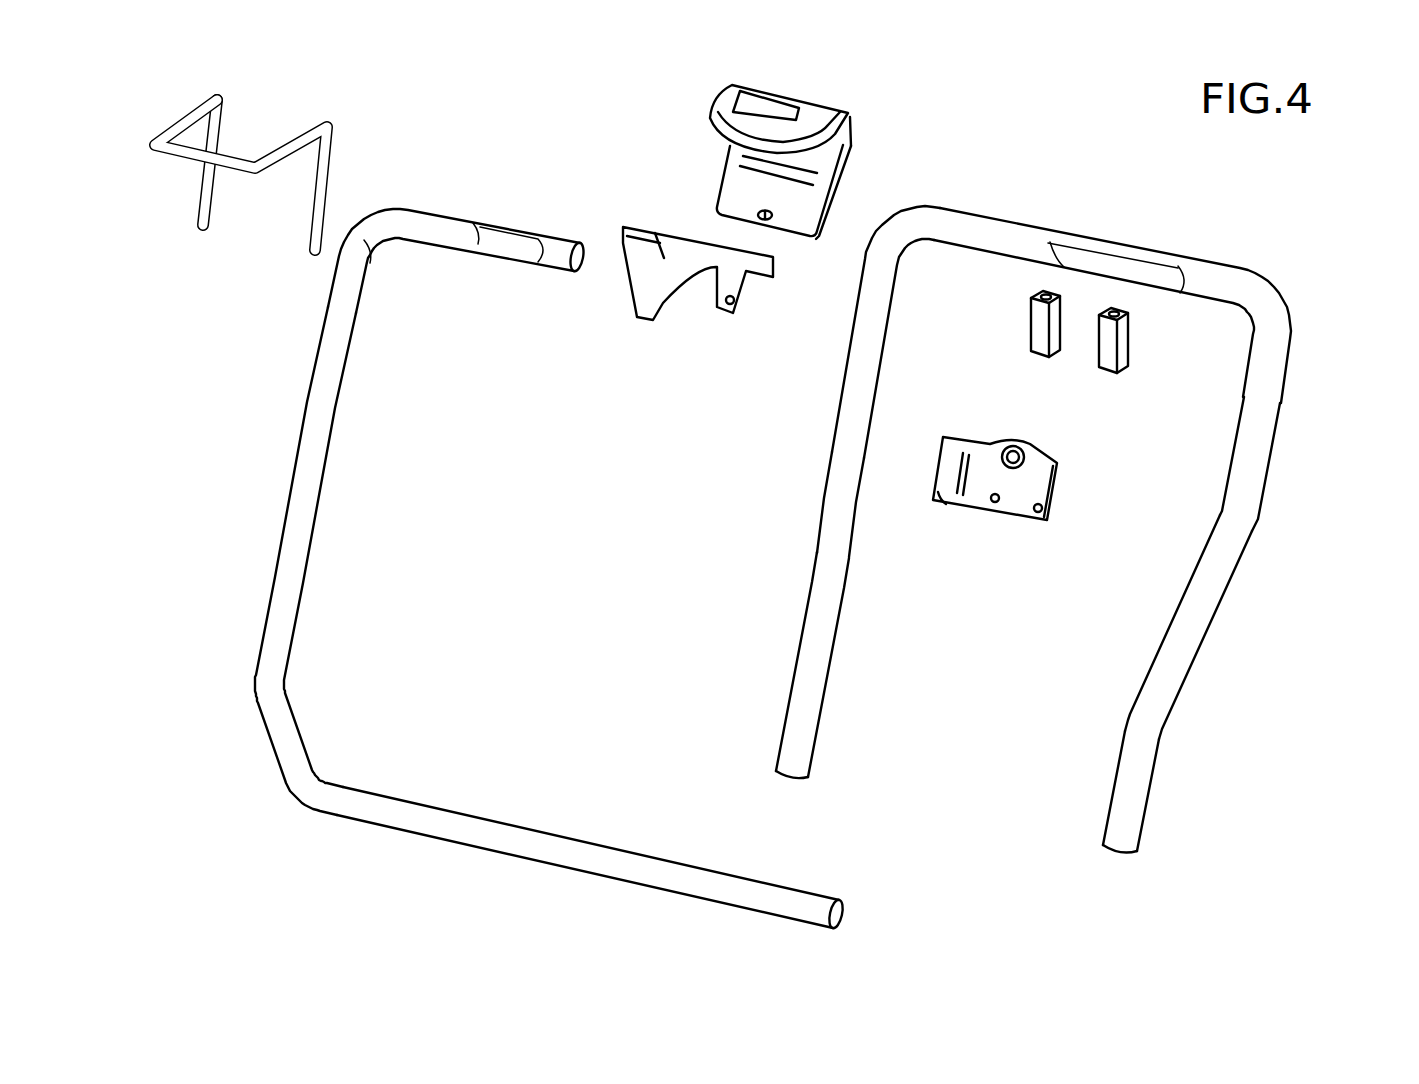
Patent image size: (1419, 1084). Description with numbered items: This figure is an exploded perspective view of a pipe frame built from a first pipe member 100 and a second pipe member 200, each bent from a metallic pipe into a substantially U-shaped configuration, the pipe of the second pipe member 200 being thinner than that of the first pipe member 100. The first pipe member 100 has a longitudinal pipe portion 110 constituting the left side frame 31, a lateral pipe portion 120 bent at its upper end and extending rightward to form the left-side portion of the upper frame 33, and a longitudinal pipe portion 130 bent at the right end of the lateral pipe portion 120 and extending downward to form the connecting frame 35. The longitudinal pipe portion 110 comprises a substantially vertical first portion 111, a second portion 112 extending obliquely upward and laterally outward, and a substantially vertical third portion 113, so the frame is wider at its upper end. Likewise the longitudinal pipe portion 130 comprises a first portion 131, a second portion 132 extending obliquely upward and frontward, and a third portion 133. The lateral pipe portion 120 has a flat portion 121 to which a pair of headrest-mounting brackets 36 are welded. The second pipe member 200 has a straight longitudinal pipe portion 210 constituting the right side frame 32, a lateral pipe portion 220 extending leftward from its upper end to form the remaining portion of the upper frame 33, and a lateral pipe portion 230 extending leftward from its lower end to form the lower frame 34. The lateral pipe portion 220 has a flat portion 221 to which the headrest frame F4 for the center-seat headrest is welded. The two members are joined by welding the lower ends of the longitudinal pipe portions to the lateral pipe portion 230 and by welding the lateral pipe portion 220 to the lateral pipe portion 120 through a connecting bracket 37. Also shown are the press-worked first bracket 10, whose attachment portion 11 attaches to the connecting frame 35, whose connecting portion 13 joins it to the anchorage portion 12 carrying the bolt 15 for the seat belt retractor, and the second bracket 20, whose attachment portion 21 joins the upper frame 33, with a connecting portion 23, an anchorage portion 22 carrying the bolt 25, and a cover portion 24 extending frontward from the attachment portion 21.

The first pipe member 100 is at (1057, 501).
The longitudinal pipe portion 110 is at (1261, 625).
The first portion 111 is at (1138, 795).
The second portion 112 is at (1198, 612).
The third portion 113 is at (1252, 478).
The lateral pipe portion 120 is at (1112, 276).
The flat portion 121 is at (1132, 268).
The longitudinal pipe portion 130 is at (818, 492).
The first portion 131 is at (800, 713).
The second portion 132 is at (818, 572).
The third portion 133 is at (848, 411).
The second pipe member 200 is at (501, 547).
The longitudinal pipe portion 210 is at (256, 561).
The lateral pipe portion 220 is at (489, 239).
The flat portion 221 is at (475, 240).
The lateral pipe portion 230 is at (591, 858).
The first bracket 10 is at (1000, 480).
The attachment portion 11 is at (945, 500).
The anchorage portion 12 is at (1010, 522).
The connecting portion 13 is at (960, 486).
The bolt 15 is at (1013, 446).
The second bracket 20 is at (809, 179).
The attachment portion 21 is at (789, 125).
The anchorage portion 22 is at (807, 209).
The connecting portion 23 is at (820, 168).
The cover portion 24 is at (766, 110).
The bolt 25 is at (771, 219).
The left side frame 31 is at (1219, 625).
The right side frame 32 is at (290, 492).
The upper frame 33 is at (1112, 295).
The lower frame 34 is at (402, 836).
The connecting frame 35 is at (826, 492).
The headrest-mounting bracket 36 is at (1040, 330).
The connecting bracket 37 is at (642, 330).
The headrest frame F4 is at (330, 150).